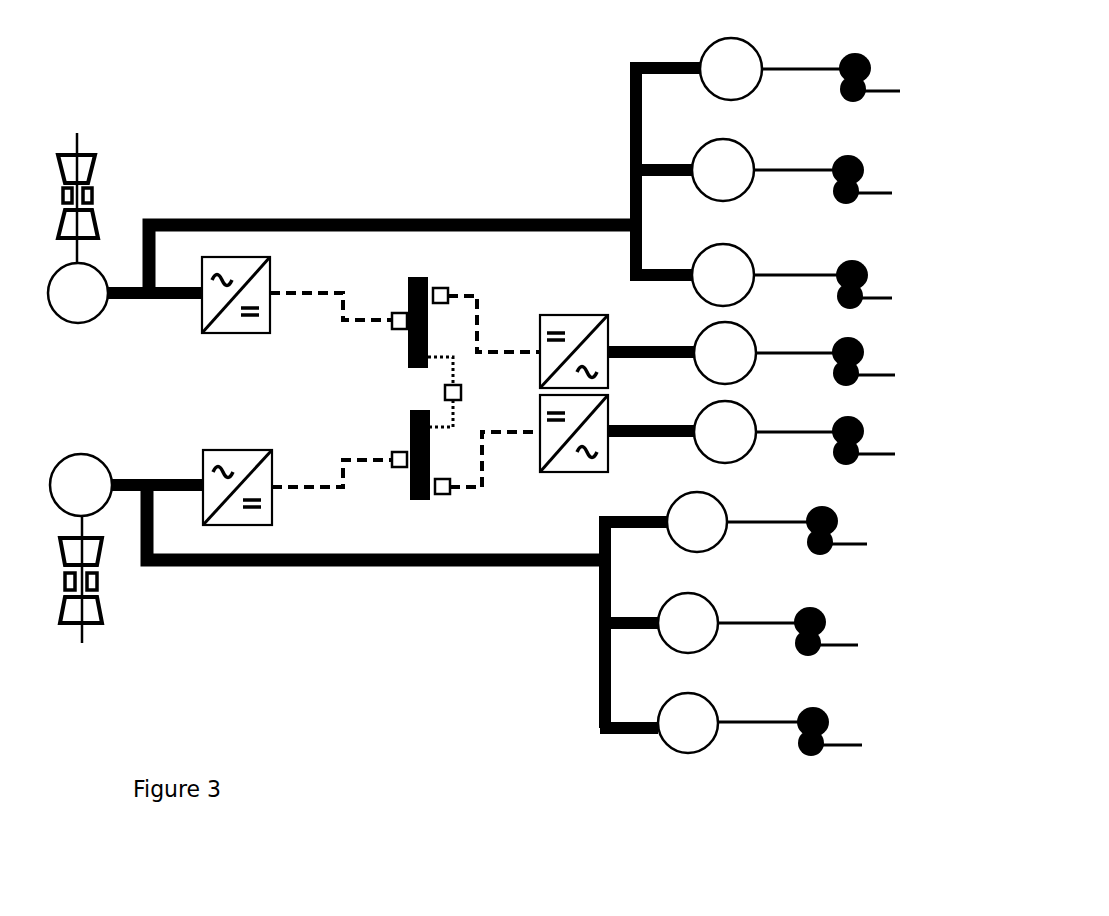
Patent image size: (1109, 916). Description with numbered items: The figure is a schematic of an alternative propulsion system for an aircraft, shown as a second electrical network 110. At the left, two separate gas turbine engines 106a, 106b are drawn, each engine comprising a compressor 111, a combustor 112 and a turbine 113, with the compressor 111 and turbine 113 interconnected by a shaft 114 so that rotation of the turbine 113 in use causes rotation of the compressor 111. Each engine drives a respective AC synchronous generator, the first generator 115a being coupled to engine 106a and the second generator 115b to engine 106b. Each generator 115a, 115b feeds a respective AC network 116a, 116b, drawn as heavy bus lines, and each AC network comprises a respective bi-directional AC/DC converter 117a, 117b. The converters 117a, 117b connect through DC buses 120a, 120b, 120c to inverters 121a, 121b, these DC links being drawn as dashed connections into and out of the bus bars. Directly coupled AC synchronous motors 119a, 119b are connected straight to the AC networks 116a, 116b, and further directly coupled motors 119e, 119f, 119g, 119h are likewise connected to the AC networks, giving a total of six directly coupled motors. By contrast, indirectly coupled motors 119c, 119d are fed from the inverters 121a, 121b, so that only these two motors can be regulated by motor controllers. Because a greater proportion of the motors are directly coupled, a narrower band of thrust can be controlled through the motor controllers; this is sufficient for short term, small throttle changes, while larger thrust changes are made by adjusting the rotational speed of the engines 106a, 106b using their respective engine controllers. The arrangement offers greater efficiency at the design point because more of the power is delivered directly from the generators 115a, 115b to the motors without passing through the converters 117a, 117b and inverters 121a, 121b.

The gas turbine engine 106a is at (167, 146).
The gas turbine engine 106b is at (166, 622).
The second electrical network 110 is at (430, 177).
The compressor 111 is at (63, 195).
The combustor 112 is at (95, 158).
The turbine 113 is at (97, 224).
The shaft 114 is at (80, 247).
The first AC synchronous generator 115a is at (108, 314).
The second AC synchronous generator 115b is at (107, 456).
The AC network 116a is at (290, 218).
The AC network 116b is at (423, 567).
The bi-directional AC/DC converter 117a is at (271, 293).
The bi-directional AC/DC converter 117b is at (272, 520).
The directly coupled AC synchronous motor 119a is at (708, 43).
The directly coupled AC synchronous motor 119b is at (675, 498).
The indirectly coupled motor 119c is at (705, 324).
The indirectly coupled motor 119d is at (705, 397).
The further directly coupled motor 119e is at (700, 141).
The further directly coupled motor 119f is at (701, 247).
The further directly coupled motor 119g is at (708, 597).
The further directly coupled motor 119h is at (712, 697).
The DC bus 120a is at (428, 277).
The DC bus 120b is at (366, 422).
The DC bus 120c is at (413, 500).
The inverter 121a is at (554, 315).
The inverter 121b is at (572, 472).